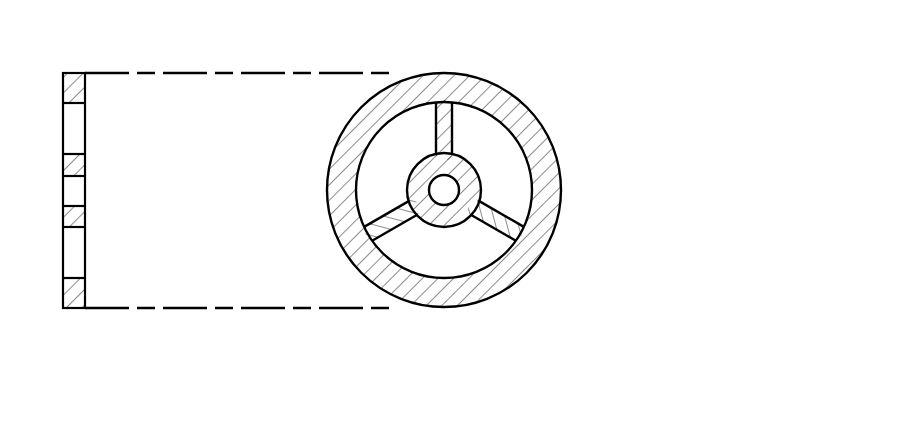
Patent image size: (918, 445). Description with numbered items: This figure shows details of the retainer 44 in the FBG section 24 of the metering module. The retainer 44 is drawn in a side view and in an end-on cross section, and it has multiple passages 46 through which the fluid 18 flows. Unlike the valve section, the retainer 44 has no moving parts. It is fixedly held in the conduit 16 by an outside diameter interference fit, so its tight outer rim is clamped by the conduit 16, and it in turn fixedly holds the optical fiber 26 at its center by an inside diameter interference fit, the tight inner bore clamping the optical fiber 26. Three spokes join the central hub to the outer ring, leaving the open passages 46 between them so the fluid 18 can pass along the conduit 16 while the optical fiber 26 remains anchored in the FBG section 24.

The passages 46 is at (593, 143).
The fluid 18 is at (550, 157).
The conduit 16 is at (446, 190).
The optical fiber 26 is at (618, 261).
The retainer 44 is at (381, 252).
The FBG section 24 is at (340, 244).